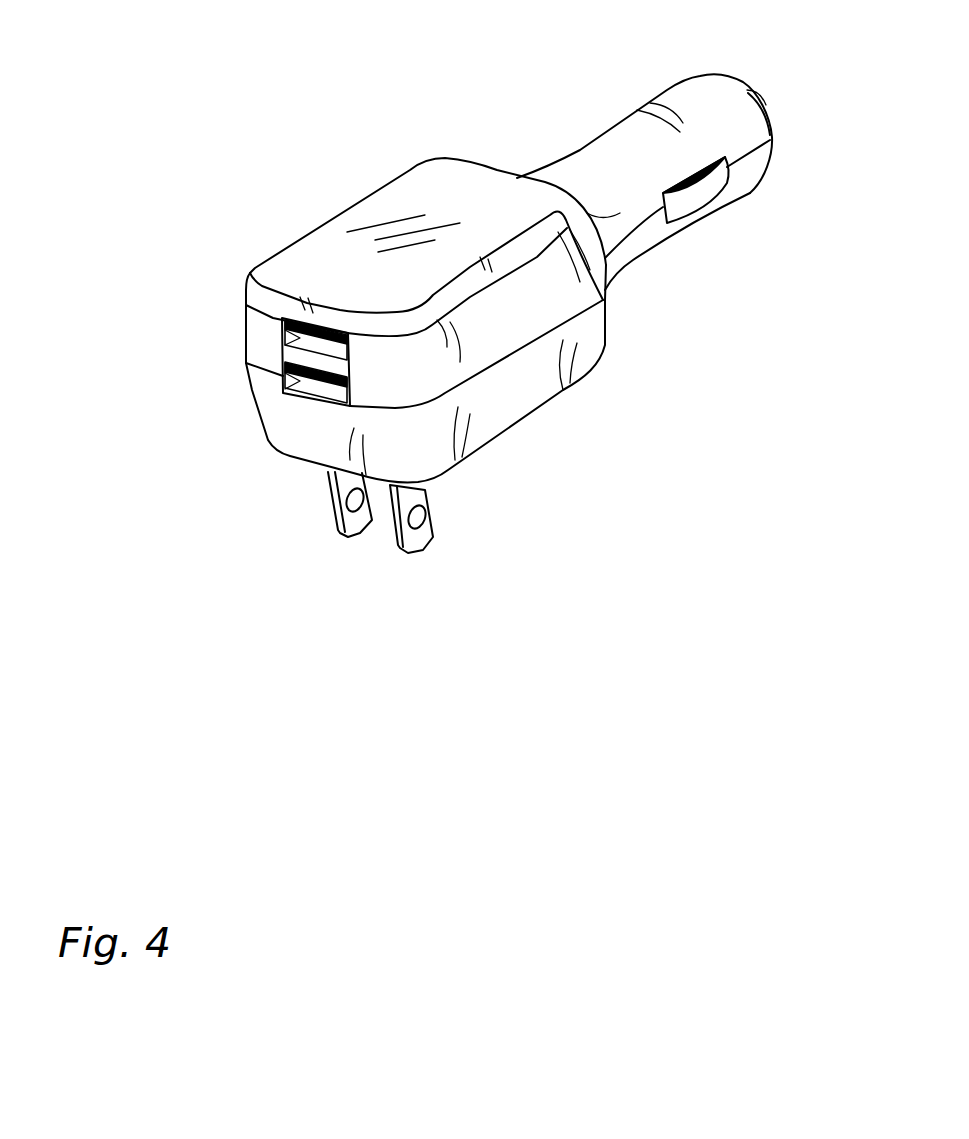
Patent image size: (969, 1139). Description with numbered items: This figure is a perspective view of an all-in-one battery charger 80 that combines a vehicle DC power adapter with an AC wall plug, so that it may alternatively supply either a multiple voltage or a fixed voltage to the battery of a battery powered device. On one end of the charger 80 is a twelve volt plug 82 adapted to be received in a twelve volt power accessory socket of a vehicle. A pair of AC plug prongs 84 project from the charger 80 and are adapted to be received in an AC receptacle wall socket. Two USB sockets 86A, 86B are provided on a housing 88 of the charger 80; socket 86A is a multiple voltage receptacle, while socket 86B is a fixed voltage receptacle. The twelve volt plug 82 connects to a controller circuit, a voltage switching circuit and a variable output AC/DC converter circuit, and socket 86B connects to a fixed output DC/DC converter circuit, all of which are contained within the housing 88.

The charger 80 is at (348, 195).
The 12 volt plug 82 is at (753, 169).
The AC plug prongs 84 is at (428, 531).
The USB socket 86A is at (282, 372).
The USB socket 86B is at (282, 326).
The housing 88 is at (457, 158).